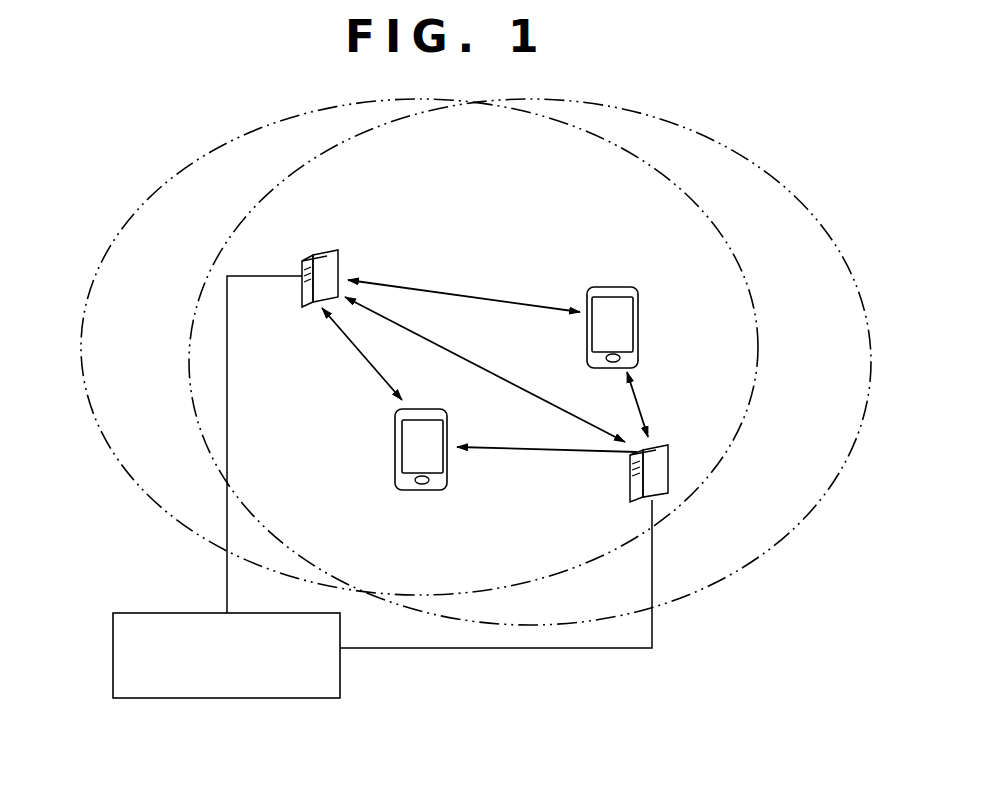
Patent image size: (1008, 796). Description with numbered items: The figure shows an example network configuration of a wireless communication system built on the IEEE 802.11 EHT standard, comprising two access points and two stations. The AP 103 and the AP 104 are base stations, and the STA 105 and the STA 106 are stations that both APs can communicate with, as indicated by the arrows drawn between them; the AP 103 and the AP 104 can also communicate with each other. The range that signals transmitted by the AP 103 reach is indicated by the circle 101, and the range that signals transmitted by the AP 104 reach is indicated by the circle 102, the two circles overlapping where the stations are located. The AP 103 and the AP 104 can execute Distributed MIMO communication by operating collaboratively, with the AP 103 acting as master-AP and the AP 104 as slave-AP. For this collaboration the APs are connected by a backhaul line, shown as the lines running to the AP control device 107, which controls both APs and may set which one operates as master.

The circle 101 is at (730, 575).
The circle 102 is at (125, 468).
The AP 103 is at (654, 446).
The AP 104 is at (327, 250).
The STA 105 is at (424, 408).
The STA 106 is at (617, 287).
The AP control device 107 is at (168, 698).